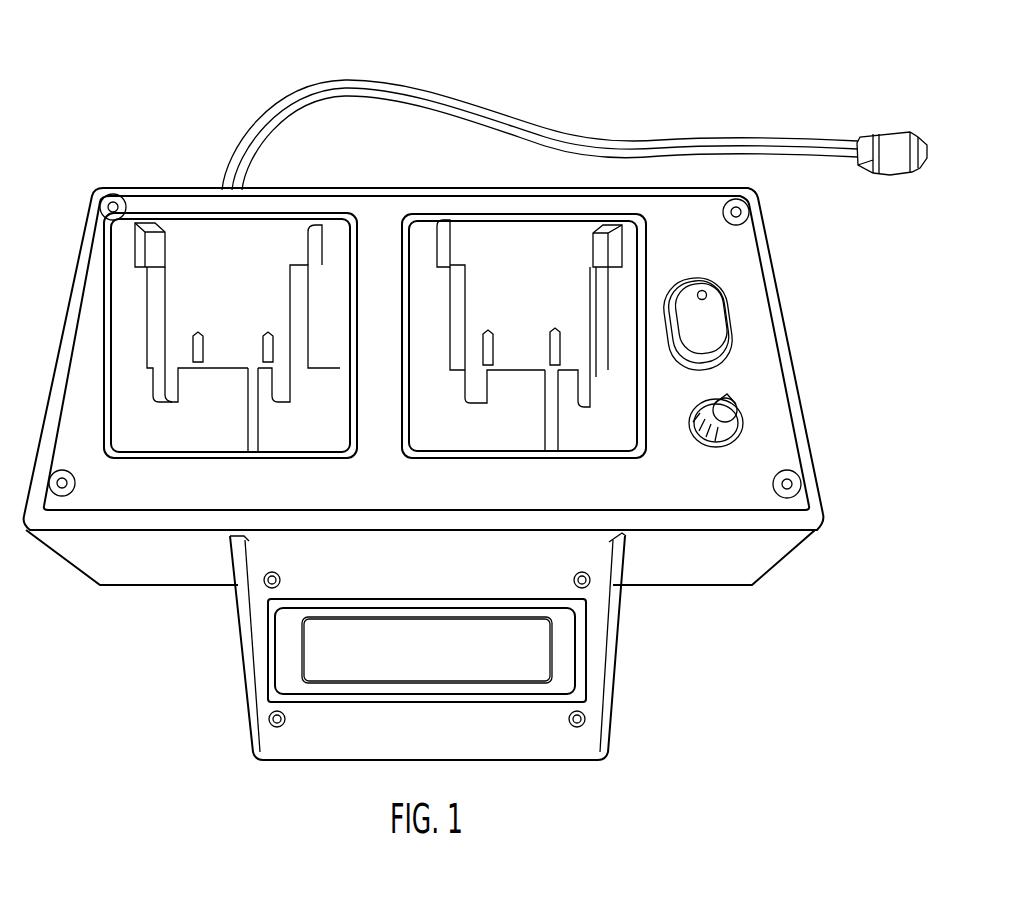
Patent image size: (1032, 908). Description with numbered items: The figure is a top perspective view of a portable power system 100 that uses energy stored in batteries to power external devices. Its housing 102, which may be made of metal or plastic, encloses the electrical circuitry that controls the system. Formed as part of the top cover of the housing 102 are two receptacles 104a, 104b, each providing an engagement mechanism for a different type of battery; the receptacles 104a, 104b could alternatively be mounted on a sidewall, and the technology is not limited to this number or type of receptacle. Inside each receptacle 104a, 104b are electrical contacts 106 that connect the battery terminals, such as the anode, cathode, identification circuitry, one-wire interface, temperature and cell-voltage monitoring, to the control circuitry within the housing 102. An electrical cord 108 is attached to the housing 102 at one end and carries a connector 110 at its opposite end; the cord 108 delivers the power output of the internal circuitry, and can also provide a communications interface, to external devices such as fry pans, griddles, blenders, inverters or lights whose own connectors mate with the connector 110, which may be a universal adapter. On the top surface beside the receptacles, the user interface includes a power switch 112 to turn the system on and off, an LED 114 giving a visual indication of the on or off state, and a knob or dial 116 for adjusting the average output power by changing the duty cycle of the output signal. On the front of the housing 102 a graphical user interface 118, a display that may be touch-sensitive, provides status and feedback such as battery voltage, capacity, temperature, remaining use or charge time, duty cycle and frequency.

The portable power system 100 is at (191, 47).
The housing 102 is at (51, 328).
The receptacle 104a is at (332, 291).
The receptacle 104b is at (426, 321).
The electrical contacts 106 is at (202, 323).
The electrical cord 108 is at (734, 131).
The connector 110 is at (891, 131).
The power switch 112 is at (713, 339).
The LED 114 is at (721, 293).
The knob or dial 116 is at (738, 408).
The graphical user interface 118 is at (535, 661).